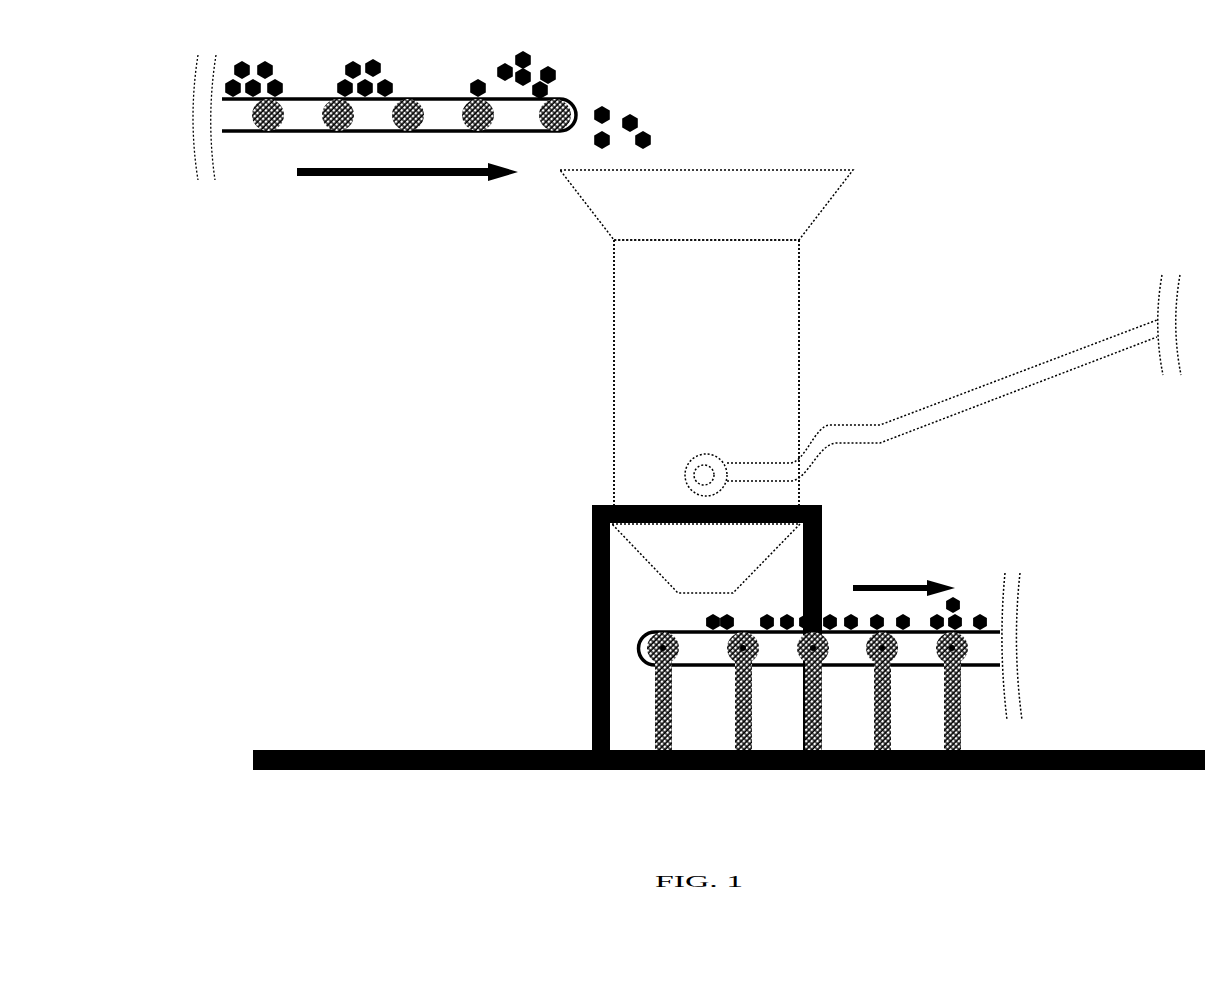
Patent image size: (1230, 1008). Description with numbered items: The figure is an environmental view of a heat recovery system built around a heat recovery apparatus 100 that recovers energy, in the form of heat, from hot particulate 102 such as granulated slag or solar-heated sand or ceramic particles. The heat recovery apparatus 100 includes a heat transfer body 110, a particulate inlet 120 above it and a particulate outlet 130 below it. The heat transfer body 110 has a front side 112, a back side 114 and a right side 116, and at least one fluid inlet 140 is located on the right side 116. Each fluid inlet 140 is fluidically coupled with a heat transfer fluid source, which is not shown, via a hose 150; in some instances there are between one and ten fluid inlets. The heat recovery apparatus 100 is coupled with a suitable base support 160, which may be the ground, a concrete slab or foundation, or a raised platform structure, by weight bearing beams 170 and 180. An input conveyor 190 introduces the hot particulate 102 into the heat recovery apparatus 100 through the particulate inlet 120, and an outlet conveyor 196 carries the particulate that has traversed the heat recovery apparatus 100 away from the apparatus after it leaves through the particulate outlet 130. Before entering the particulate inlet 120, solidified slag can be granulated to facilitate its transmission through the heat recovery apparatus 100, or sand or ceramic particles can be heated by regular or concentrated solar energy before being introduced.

The heat recovery apparatus 100 is at (1018, 157).
The hot particulate 102 is at (668, 107).
The heat transfer body 110 is at (808, 358).
The front side 112 is at (607, 300).
The back side 114 is at (808, 290).
The right side 116 is at (680, 372).
The particulate inlet 120 is at (821, 160).
The particulate outlet 130 is at (645, 567).
The fluid inlet 140 is at (683, 468).
The hose 150 is at (1088, 375).
The base support 160 is at (343, 748).
The beam 170 is at (578, 658).
The beam 180 is at (838, 512).
The input conveyor 190 is at (258, 142).
The outlet conveyor 196 is at (1024, 641).